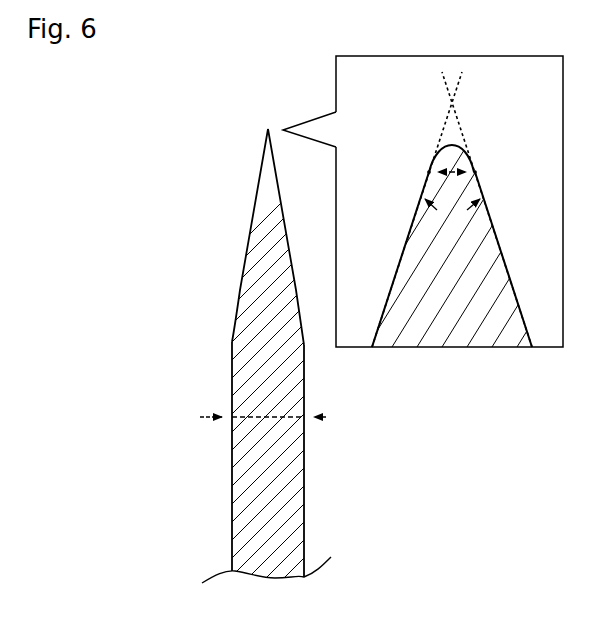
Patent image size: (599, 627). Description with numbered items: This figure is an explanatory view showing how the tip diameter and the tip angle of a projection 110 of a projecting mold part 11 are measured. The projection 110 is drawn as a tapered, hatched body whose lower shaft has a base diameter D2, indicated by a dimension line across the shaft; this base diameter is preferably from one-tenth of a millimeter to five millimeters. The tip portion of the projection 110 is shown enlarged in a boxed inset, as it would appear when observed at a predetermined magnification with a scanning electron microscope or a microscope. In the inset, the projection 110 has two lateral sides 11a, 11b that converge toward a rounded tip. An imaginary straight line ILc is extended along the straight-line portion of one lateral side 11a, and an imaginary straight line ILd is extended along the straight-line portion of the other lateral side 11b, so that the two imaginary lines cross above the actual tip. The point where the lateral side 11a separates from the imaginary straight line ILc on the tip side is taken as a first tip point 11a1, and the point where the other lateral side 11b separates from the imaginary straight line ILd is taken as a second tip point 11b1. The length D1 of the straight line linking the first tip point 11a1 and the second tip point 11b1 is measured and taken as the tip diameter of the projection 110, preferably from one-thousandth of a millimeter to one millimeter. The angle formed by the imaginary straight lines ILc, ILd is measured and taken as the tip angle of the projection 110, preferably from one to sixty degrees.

The projecting mold part 11 is at (199, 176).
The projection 110 is at (243, 287).
The base diameter D2 is at (273, 418).
The lateral side 11a is at (498, 240).
The other lateral side 11b is at (402, 255).
The first tip point 11a1 is at (476, 172).
The second tip point 11b1 is at (428, 172).
The imaginary straight line ILc is at (462, 130).
The imaginary straight line ILd is at (437, 137).
The tip diameter D1 is at (452, 184).